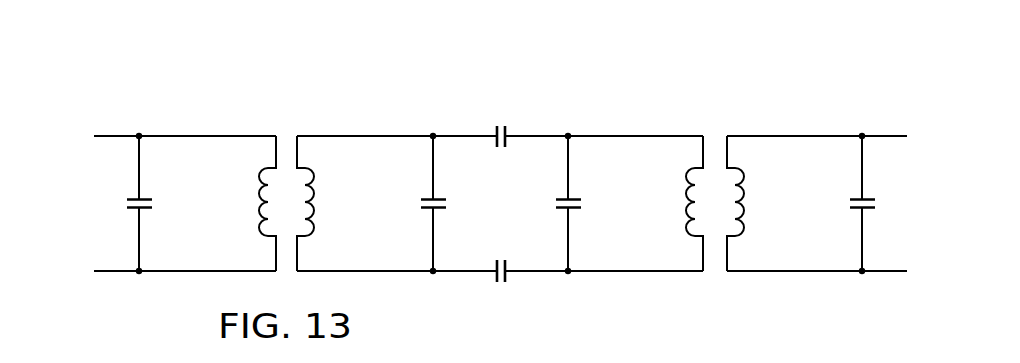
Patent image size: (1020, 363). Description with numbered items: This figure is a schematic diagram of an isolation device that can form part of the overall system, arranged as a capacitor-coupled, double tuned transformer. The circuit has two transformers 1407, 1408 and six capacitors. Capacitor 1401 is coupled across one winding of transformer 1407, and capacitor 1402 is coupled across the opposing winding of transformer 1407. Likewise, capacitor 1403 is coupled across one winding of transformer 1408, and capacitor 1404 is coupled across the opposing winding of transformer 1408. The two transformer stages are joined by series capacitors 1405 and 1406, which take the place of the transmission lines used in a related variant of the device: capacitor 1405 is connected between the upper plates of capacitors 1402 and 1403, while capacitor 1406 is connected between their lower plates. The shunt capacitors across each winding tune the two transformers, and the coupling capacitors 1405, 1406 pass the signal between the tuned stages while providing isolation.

The capacitor 1401 is at (127, 204).
The capacitor 1402 is at (421, 204).
The capacitor 1403 is at (582, 204).
The capacitor 1404 is at (876, 204).
The capacitor 1405 is at (502, 124).
The capacitor 1406 is at (500, 283).
The transformer 1407 is at (284, 149).
The transformer 1408 is at (716, 150).